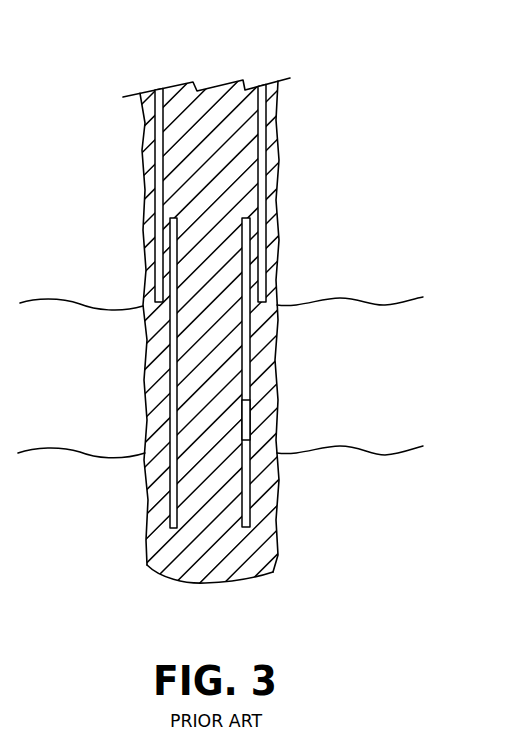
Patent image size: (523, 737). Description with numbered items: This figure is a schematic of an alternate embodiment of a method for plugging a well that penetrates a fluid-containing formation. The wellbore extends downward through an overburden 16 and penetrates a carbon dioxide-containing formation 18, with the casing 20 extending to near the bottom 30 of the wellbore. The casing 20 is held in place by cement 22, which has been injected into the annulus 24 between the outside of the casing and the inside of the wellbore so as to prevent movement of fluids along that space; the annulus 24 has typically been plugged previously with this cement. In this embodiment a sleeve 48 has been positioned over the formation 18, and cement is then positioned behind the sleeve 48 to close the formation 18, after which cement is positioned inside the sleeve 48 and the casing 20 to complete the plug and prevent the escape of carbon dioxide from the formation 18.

The overburden 16 is at (376, 162).
The carbon dioxide-containing formation 18 is at (385, 390).
The casing 20 is at (262, 122).
The cement 22 is at (257, 322).
The annulus 24 is at (268, 188).
The bottom of wellbore 30 is at (212, 585).
The sleeve 48 is at (246, 420).